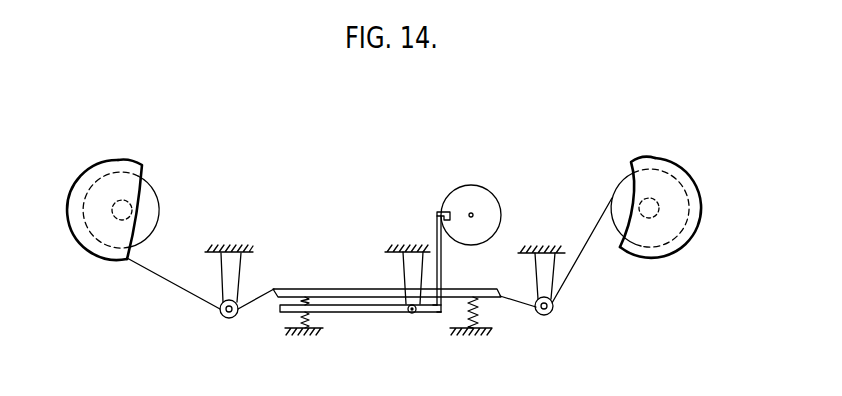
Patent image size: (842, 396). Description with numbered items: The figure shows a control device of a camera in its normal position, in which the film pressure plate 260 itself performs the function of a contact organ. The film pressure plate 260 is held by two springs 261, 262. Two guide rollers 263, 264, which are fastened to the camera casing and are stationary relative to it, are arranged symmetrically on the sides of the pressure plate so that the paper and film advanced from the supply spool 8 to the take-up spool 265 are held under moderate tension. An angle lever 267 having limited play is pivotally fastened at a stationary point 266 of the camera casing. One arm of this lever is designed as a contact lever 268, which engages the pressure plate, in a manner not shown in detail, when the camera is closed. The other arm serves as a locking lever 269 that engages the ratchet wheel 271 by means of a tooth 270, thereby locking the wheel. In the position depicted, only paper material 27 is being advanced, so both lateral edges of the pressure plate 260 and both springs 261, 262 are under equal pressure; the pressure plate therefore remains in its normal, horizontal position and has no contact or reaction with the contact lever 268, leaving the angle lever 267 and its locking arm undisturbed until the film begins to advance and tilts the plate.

The supply spool 8 is at (152, 200).
The paper material 27 is at (168, 283).
The film pressure plate 260 is at (320, 289).
The spring 261 is at (300, 316).
The spring 262 is at (480, 313).
The guide roller 263 is at (218, 313).
The guide roller 264 is at (553, 311).
The take-up spool 265 is at (633, 186).
The stationary point 266 is at (410, 313).
The angle lever 267 is at (438, 316).
The contact lever 268 is at (370, 309).
The locking lever 269 is at (438, 268).
The tooth 270 is at (442, 212).
The ratchet wheel 271 is at (490, 196).